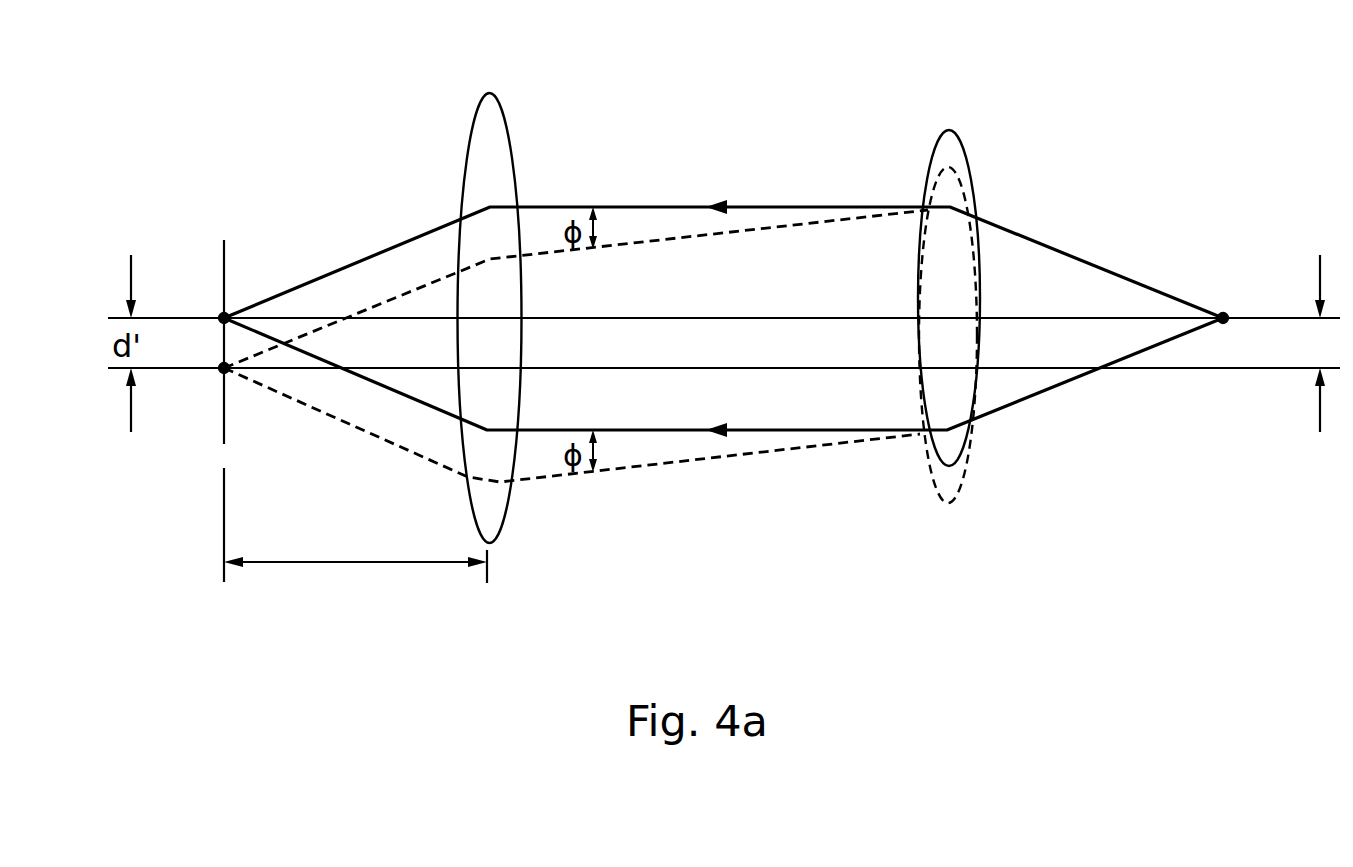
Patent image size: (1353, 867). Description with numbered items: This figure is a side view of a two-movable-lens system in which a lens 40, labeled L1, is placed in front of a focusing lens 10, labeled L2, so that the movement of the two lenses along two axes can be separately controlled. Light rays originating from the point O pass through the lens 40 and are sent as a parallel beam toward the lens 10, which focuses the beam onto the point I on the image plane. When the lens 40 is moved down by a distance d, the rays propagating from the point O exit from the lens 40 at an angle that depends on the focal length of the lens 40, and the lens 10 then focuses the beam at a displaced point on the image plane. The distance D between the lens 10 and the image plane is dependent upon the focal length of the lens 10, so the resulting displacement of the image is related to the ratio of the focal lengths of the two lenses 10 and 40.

The focusing lens 10 is at (554, 292).
The lens 40 is at (1007, 275).
The lens L2 is at (490, 294).
The lens L1 is at (949, 275).
The point on the image plane I is at (208, 346).
The point O is at (1224, 295).
The distance d is at (1313, 343).
The distance D is at (355, 549).